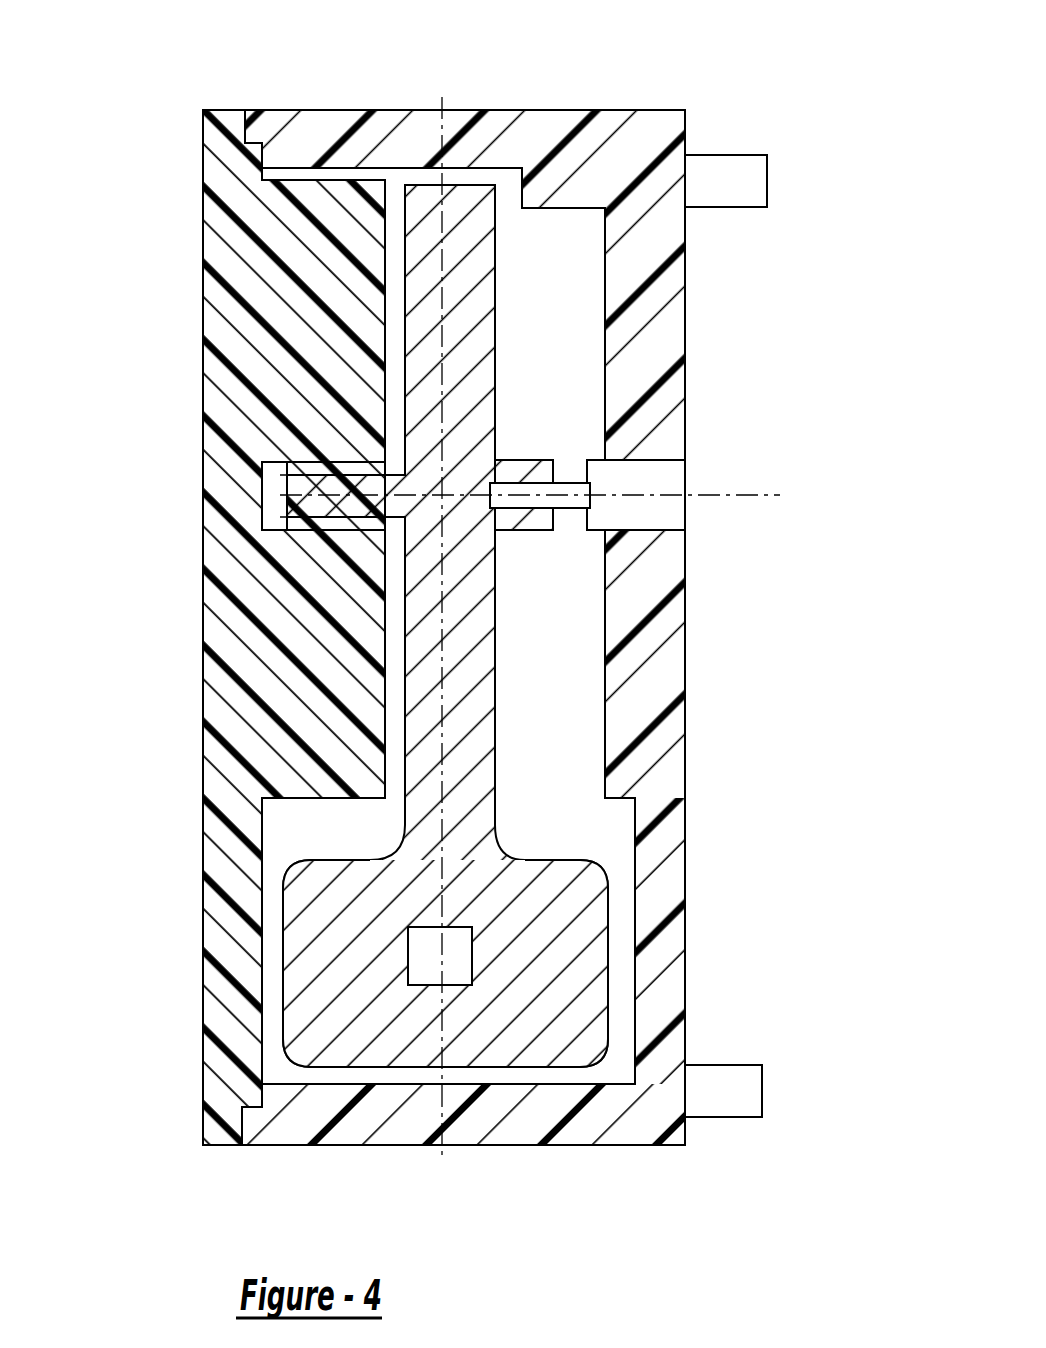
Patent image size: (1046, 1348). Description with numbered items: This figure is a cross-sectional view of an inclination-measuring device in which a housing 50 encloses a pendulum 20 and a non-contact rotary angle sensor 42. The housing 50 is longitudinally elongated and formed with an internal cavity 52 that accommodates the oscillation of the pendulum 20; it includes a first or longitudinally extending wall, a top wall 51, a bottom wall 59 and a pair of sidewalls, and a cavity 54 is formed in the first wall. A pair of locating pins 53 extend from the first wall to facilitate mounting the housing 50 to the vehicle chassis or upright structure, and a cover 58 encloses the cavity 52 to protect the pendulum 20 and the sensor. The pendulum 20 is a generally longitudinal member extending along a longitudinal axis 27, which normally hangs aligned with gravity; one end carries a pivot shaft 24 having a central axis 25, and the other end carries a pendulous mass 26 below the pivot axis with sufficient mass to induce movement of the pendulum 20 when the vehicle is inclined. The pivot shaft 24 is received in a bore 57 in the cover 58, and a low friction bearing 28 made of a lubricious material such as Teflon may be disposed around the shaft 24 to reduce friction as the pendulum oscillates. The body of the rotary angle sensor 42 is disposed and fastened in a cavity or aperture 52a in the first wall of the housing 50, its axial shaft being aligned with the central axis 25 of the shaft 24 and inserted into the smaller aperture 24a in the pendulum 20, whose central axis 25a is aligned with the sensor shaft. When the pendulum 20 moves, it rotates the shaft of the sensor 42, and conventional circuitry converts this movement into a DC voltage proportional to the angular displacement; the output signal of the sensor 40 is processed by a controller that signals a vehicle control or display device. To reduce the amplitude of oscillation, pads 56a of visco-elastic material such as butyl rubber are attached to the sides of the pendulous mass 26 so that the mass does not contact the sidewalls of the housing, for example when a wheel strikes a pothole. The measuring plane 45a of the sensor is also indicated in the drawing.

The pendulum 20 is at (428, 185).
The pivot shaft 24 is at (285, 505).
The aperture 24a is at (505, 483).
The central axis of pivot shaft 25 is at (300, 527).
The central axis of aperture 25a is at (628, 497).
The pendulous mass 26 is at (315, 988).
The longitudinal axis 27 is at (440, 1158).
The low friction bearing 28 is at (300, 424).
The sensor 40 is at (795, 437).
The rotary angle sensor 42 is at (662, 460).
The inner wall surface 45a is at (610, 345).
The housing 50 is at (685, 975).
The top wall 51 is at (562, 110).
The internal cavity 52 is at (554, 828).
The aperture 52a is at (660, 510).
The locating pins 53 is at (778, 155).
The cavity 54 is at (628, 208).
The pads 56a is at (408, 956).
The bore 57 is at (262, 462).
The cover 58 is at (203, 1100).
The bottom wall 59 is at (585, 1148).